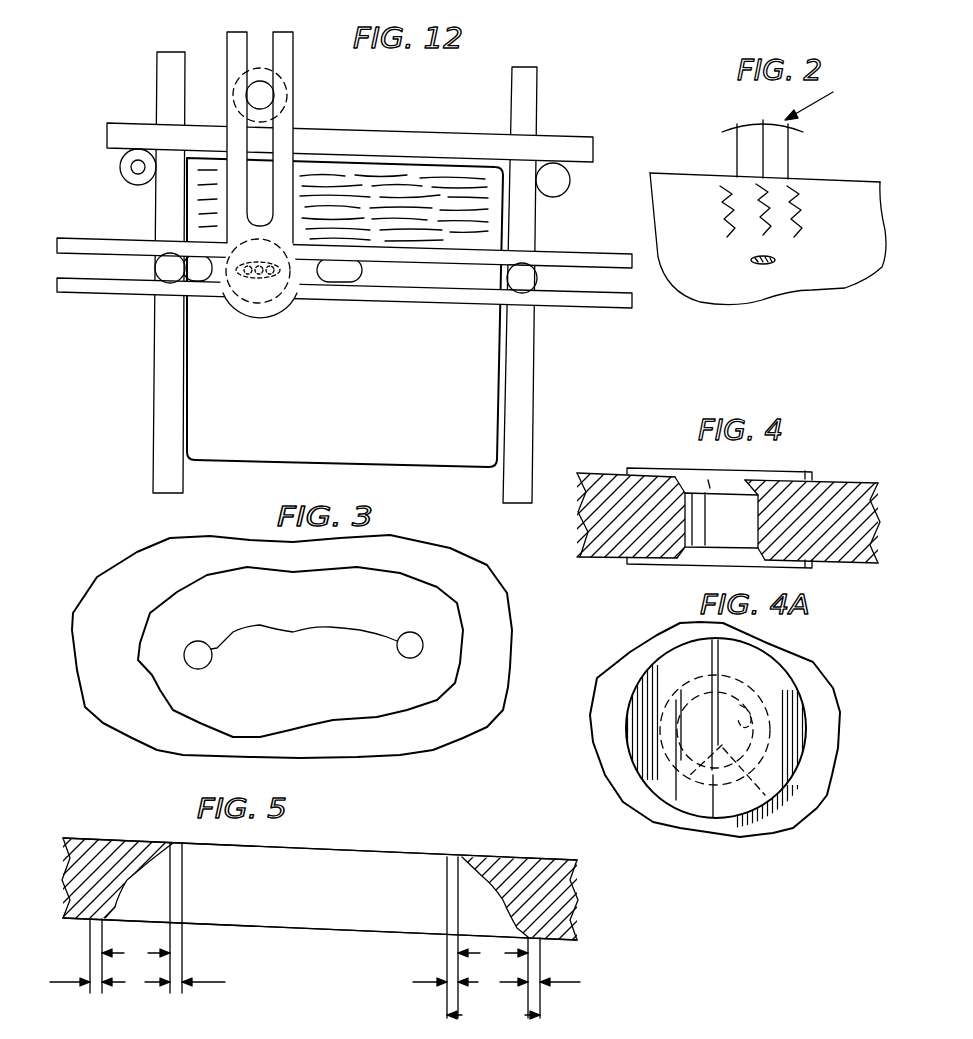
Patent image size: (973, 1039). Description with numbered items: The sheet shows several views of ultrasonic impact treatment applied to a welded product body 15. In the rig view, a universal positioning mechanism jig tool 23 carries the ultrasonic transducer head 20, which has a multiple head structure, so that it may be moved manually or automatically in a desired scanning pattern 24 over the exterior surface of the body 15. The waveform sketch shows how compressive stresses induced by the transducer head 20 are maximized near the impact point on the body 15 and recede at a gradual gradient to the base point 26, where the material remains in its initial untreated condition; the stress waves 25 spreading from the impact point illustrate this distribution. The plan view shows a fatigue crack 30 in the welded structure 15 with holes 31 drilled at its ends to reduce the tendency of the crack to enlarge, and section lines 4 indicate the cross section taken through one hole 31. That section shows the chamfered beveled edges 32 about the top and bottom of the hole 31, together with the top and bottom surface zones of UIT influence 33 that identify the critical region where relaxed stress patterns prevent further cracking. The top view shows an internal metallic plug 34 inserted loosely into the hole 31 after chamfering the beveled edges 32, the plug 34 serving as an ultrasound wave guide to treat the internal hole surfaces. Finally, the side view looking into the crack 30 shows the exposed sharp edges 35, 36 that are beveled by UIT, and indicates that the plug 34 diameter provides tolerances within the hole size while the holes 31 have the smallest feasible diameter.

In FIG. 2, the body 15 is at (703, 253).
In FIG. 3, the body 15 is at (493, 669).
In FIG. 4, the body 15 is at (853, 490).
In FIG. 5, the body 15 is at (557, 897).
In FIG. 12, the ultrasonic transducer head 20 is at (262, 282).
In FIG. 2, the ultrasonic transducer head 20 is at (745, 122).
In FIG. 12, the universal positioning mechanism jig tool 23 is at (546, 398).
In FIG. 12, the scanning pattern 24 is at (468, 228).
In FIG. 2, the compression waves 25 is at (803, 196).
In FIG. 2, the base point 26 is at (766, 265).
In FIG. 3, the fatigue crack 30 is at (315, 627).
In FIG. 5, the fatigue crack 30 is at (331, 899).
In FIG. 3, the holes 31 is at (428, 618).
In FIG. 4, the holes 31 is at (757, 535).
In FIG. 4A, the holes 31 is at (757, 690).
In FIG. 4, the beveled edges 32 is at (757, 488).
In FIG. 4A, the beveled edges 32 is at (773, 753).
In FIG. 4, the surface zones of UIT influence 33 is at (787, 472).
In FIG. 4A, the surface zones of UIT influence 33 is at (640, 775).
In FIG. 4A, the internal metallic plug 34 is at (787, 823).
In FIG. 5, the exposed sharp edge 35 is at (333, 932).
In FIG. 5, the exposed sharp edge 36 is at (350, 848).
In FIG. 3, the section line 4 is at (262, 653).